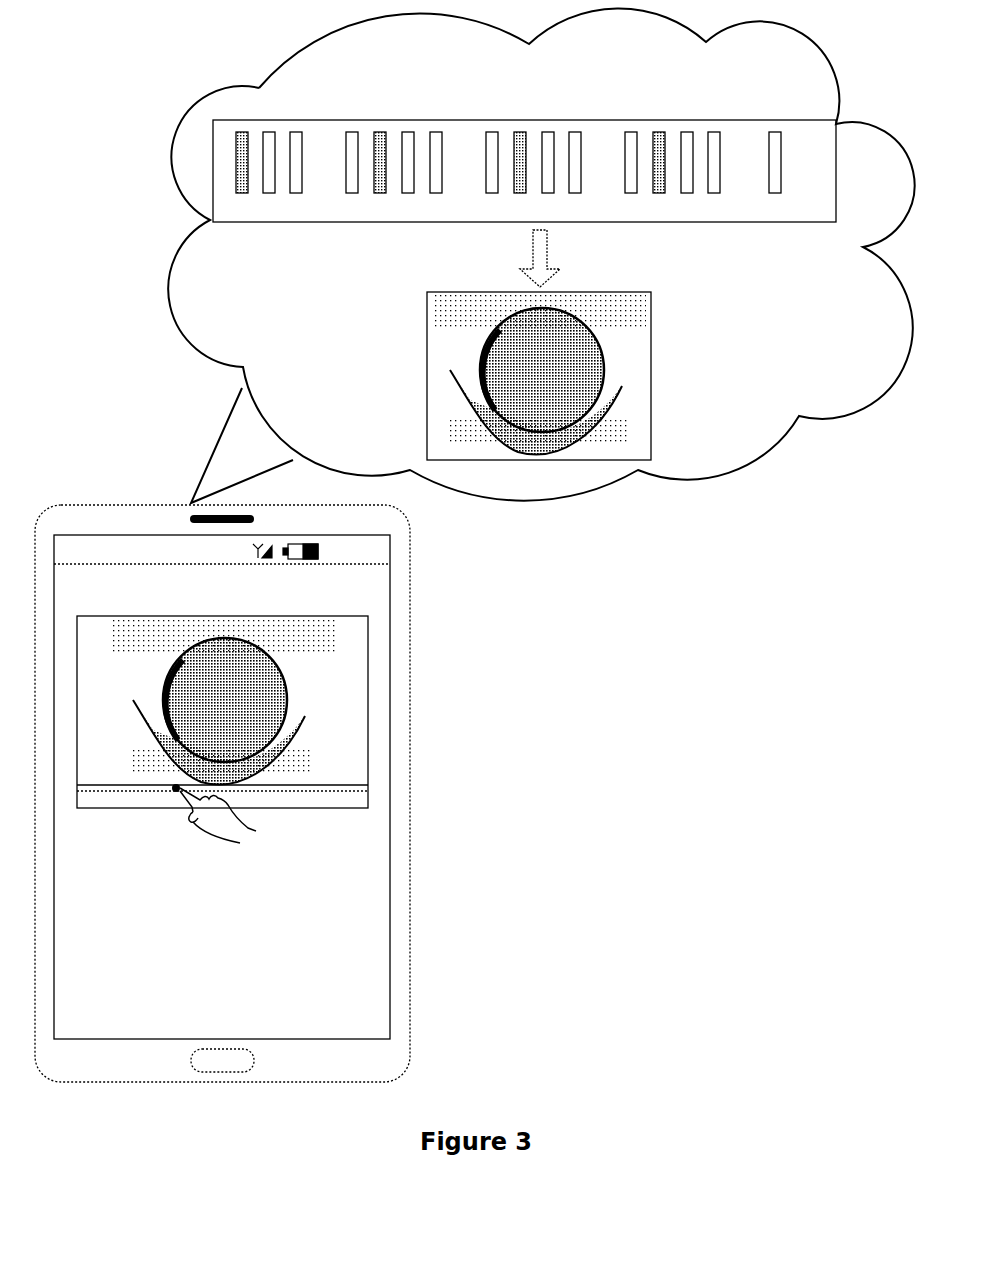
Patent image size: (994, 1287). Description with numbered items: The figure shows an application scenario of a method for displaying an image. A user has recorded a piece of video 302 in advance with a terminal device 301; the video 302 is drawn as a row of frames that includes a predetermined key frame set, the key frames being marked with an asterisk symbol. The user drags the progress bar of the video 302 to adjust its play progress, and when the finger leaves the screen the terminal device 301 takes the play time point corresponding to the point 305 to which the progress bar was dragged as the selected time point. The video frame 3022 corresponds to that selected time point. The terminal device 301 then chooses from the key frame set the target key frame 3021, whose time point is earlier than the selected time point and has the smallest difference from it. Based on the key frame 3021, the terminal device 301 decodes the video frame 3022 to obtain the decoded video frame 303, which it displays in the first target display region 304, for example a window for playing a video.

The terminal device 301 is at (106, 505).
The video 302 is at (465, 120).
The key frame 3021 is at (658, 131).
The video frame 3022 is at (713, 131).
The decoded video frame 303 is at (583, 292).
The first target display region 304 is at (278, 616).
The point 305 is at (172, 790).